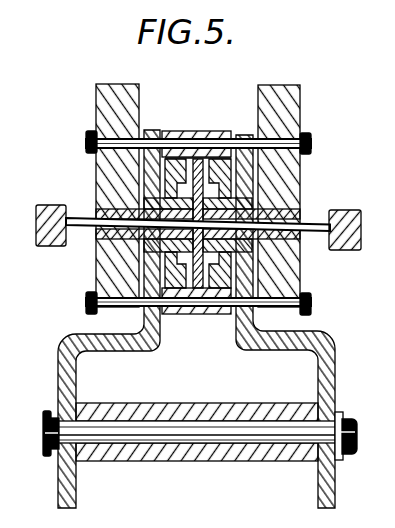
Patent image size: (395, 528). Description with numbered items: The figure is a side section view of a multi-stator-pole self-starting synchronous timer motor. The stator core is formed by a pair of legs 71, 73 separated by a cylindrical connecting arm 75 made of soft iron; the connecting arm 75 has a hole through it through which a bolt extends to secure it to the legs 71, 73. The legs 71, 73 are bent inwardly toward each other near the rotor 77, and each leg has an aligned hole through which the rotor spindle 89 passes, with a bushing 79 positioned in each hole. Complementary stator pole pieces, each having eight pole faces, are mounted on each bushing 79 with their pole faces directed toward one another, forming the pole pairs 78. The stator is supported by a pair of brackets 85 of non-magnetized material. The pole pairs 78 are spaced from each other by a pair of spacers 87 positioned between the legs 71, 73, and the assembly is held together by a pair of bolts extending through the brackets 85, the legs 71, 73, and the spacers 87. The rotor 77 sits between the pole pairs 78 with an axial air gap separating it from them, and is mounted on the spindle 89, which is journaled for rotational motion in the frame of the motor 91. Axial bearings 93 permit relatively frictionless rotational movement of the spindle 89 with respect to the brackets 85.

The leg 71 is at (327, 365).
The leg 73 is at (68, 358).
The cylindrical connecting arm 75 is at (183, 454).
The rotor 77 is at (185, 247).
The pole pairs 78 is at (216, 152).
The bushing 79 is at (200, 197).
The brackets 85 is at (292, 100).
The spacers 87 is at (191, 123).
The spindle 89 is at (306, 218).
The frame of the motor 91 is at (51, 197).
The axial bearings 93 is at (293, 228).